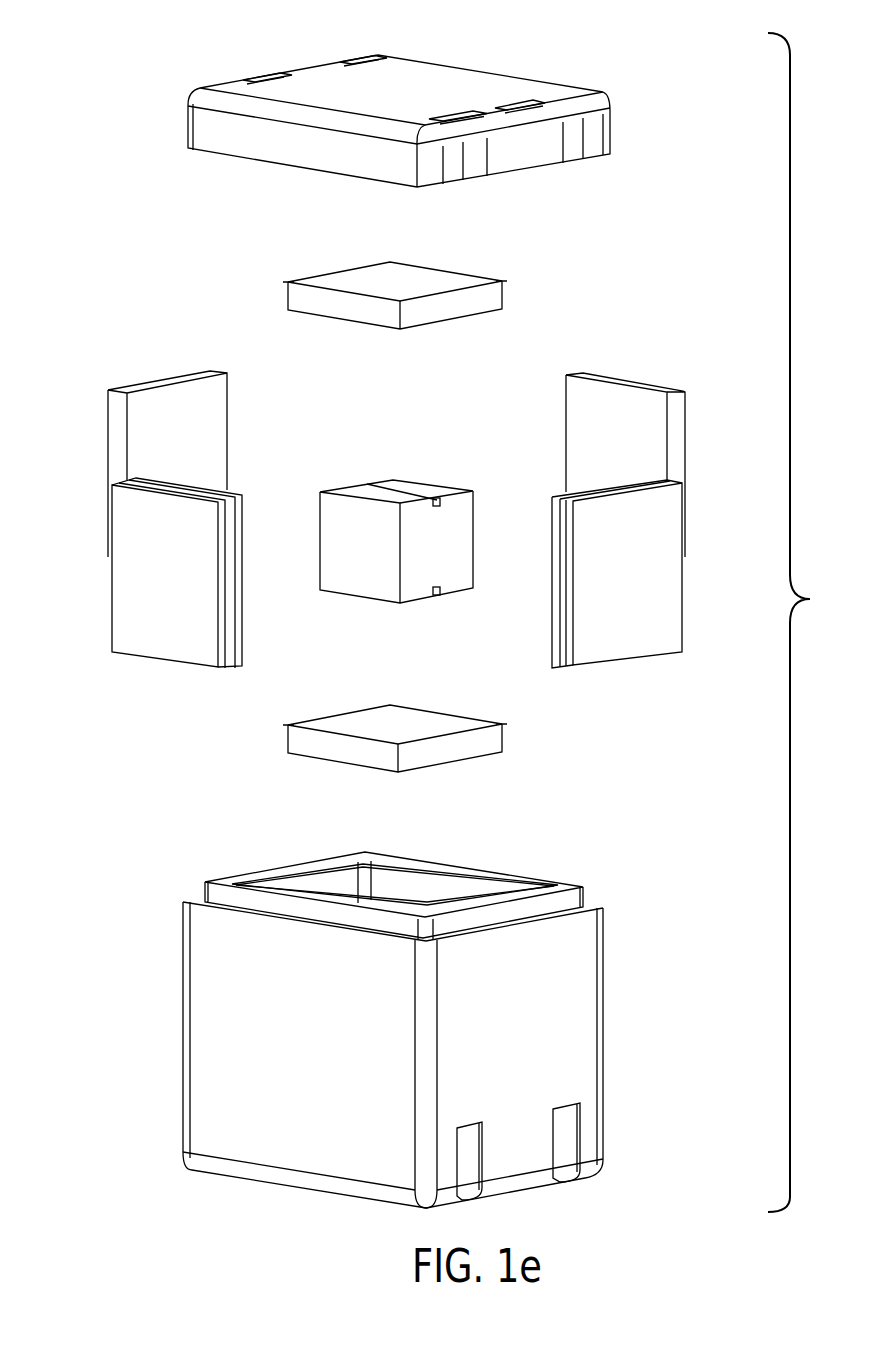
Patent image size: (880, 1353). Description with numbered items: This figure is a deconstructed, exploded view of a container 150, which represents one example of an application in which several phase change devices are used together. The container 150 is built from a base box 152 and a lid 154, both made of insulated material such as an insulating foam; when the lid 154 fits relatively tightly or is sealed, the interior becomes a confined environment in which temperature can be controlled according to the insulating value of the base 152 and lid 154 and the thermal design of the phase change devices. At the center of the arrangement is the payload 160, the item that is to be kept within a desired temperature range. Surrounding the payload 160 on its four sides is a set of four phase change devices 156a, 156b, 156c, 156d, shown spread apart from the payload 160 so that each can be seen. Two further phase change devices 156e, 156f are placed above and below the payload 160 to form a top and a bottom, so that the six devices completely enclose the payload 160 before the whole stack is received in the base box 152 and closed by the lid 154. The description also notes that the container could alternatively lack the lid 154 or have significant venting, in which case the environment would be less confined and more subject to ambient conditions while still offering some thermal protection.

The container 150 is at (137, 56).
The base box 152 is at (600, 1037).
The lid 154 is at (528, 170).
The phase change device 156a is at (684, 612).
The phase change device 156b is at (112, 566).
The phase change device 156c is at (227, 412).
The phase change device 156d is at (566, 430).
The phase change device 156e is at (455, 318).
The phase change device 156f is at (462, 757).
The payload 160 is at (473, 530).